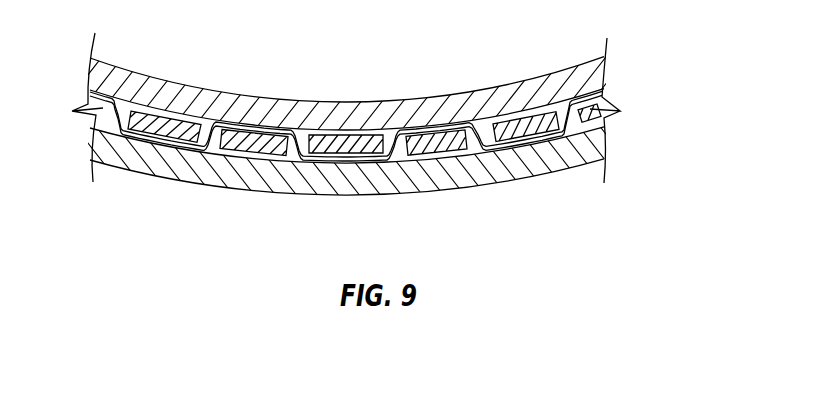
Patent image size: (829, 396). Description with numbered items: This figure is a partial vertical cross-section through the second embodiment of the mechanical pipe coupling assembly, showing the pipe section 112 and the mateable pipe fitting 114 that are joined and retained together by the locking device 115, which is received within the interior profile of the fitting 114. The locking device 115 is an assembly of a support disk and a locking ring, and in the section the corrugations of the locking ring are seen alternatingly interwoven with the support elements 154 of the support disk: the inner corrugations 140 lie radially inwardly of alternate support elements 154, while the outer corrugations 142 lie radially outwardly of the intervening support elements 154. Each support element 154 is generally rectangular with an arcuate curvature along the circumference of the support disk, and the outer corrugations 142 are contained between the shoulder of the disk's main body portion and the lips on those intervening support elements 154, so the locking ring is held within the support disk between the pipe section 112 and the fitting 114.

The pipe section 112 is at (488, 182).
The pipe fitting 114 is at (438, 94).
The locking device 115 is at (587, 117).
The inner corrugations 140 is at (337, 160).
The outer corrugations 142 is at (260, 127).
The support elements 154 is at (336, 150).